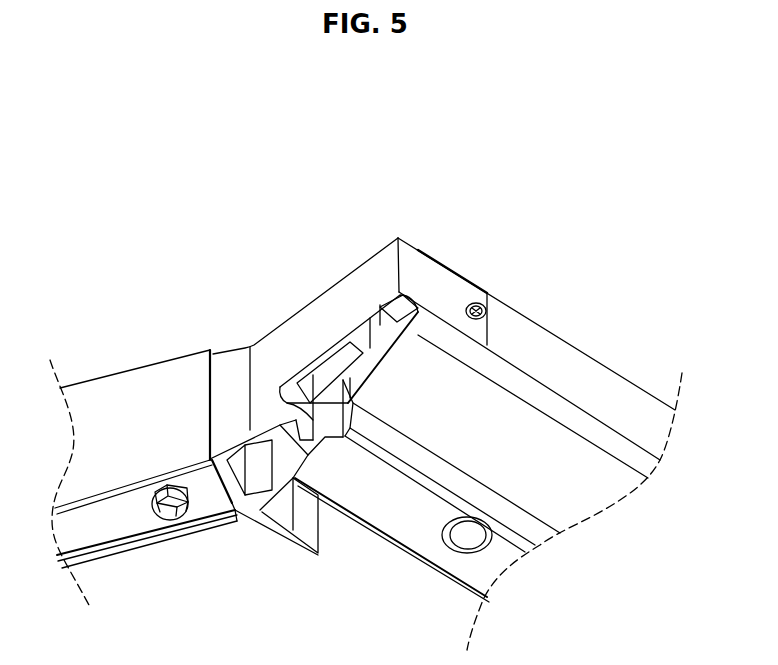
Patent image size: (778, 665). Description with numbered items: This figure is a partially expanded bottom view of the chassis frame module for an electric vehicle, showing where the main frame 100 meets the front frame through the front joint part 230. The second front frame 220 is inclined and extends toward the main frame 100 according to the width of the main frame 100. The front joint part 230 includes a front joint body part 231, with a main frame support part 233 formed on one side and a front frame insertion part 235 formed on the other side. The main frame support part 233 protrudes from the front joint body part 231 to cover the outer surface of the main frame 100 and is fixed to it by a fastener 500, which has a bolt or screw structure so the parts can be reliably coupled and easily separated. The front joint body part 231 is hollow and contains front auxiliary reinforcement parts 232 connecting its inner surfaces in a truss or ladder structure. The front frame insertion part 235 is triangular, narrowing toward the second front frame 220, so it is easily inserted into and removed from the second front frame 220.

The main frame 100 is at (577, 368).
The second front frame 220 is at (107, 520).
The front joint part 230 is at (227, 195).
The front joint body part 231 is at (300, 333).
The front auxiliary reinforcement part 232 is at (357, 340).
The main frame support part 233 is at (427, 285).
The front frame insertion part 235 is at (233, 368).
The fastener 500 is at (478, 300).